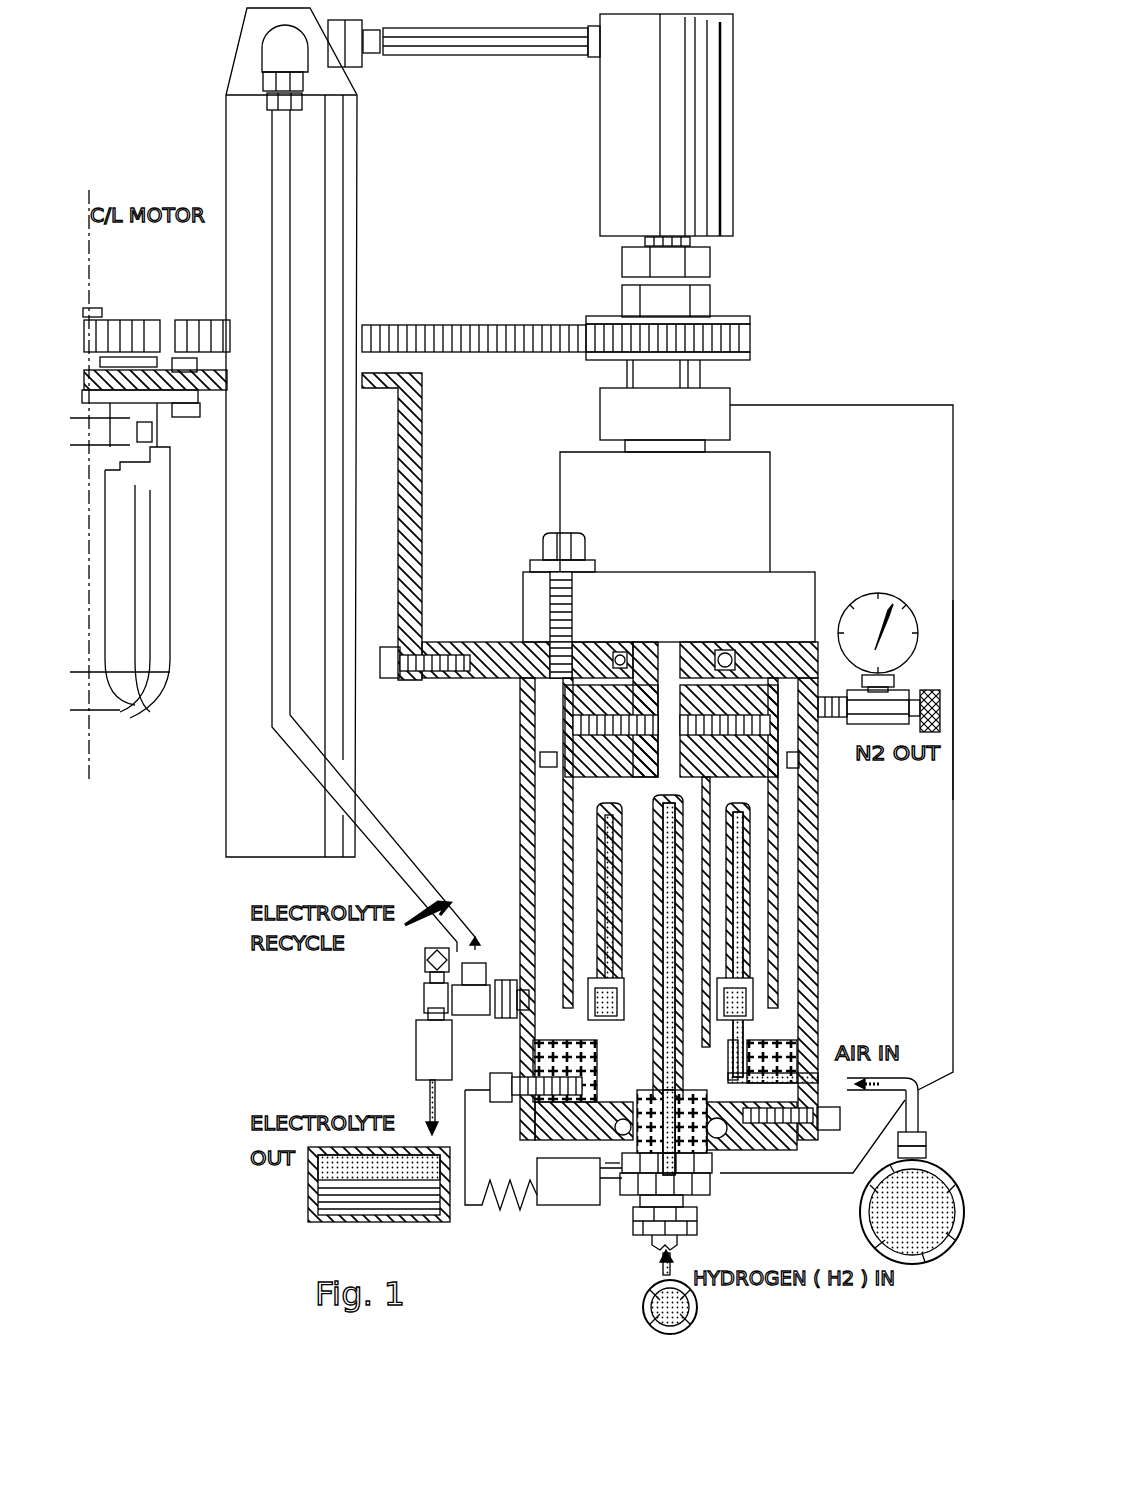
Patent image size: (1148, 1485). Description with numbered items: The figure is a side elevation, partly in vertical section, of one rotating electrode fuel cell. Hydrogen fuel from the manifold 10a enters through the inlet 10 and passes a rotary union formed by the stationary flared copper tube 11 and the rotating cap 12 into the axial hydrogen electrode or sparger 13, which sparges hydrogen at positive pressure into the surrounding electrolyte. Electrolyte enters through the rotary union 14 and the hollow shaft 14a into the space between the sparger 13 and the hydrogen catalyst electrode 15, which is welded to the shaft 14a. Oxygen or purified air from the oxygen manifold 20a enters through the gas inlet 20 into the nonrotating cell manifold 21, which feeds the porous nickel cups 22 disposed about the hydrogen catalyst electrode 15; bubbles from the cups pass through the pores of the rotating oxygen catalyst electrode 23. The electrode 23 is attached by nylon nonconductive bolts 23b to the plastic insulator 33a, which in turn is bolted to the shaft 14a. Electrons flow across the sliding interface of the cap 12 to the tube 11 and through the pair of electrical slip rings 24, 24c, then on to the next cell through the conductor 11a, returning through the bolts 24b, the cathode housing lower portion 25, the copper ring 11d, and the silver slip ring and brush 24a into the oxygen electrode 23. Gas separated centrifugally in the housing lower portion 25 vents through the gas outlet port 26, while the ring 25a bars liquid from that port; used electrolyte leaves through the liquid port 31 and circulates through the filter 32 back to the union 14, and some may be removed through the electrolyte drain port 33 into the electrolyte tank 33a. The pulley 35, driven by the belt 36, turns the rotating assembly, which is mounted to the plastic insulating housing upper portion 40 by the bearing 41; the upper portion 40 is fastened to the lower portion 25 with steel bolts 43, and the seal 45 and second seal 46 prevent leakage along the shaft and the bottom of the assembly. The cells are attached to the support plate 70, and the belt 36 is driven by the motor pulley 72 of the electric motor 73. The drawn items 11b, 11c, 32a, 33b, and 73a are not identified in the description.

The inlet 10 is at (655, 1250).
The manifold 10a is at (700, 1307).
The stationary flared copper tube 11 is at (648, 1140).
The conductor 11a is at (953, 1030).
The air passage 11b is at (738, 1153).
The air inlet fitting 11c is at (818, 1122).
The copper ring 11d is at (580, 1100).
The rotating cap 12 is at (722, 1136).
The hydrogen electrode or sparger 13 is at (660, 855).
The rotary union 14 is at (645, 120).
The hollow shaft 14a is at (655, 640).
The hydrogen catalyst electrode 15 is at (605, 833).
The gas inlet 20 is at (920, 1126).
The oxygen manifold 20a is at (872, 1228).
The nonrotating cell manifold 21 is at (742, 988).
The porous nickel cups 22 is at (753, 815).
The oxygen catalyst electrode 23 is at (615, 772).
The nylon nonconductive bolts 23b is at (568, 733).
The electrical slip ring 24 is at (565, 1118).
The silver slip ring and brush 24a is at (535, 1045).
The bolts 24b is at (500, 1083).
The electrical slip ring 24c is at (630, 420).
The housing lower portion 25 is at (808, 958).
The ring 25a is at (812, 795).
The gas outlet port 26 is at (775, 640).
The liquid port 31 is at (520, 988).
The filter 32 is at (316, 155).
The electrolyte tube 32a is at (290, 230).
The electrolyte drain port 33 is at (438, 998).
The plastic insulator 33a is at (560, 800).
The drain valve 33b is at (417, 1038).
The pulley 35 is at (612, 320).
The belt 36 is at (513, 328).
The housing upper portion 40 is at (490, 680).
The bearing 41 is at (610, 470).
The steel bolts 43 is at (545, 547).
The seal 45 is at (722, 648).
The second seal 46 is at (713, 1145).
The support plate 70 is at (422, 435).
The motor pulley 72 is at (128, 318).
The electric motor 73 is at (125, 695).
The motor mount 73a is at (140, 395).